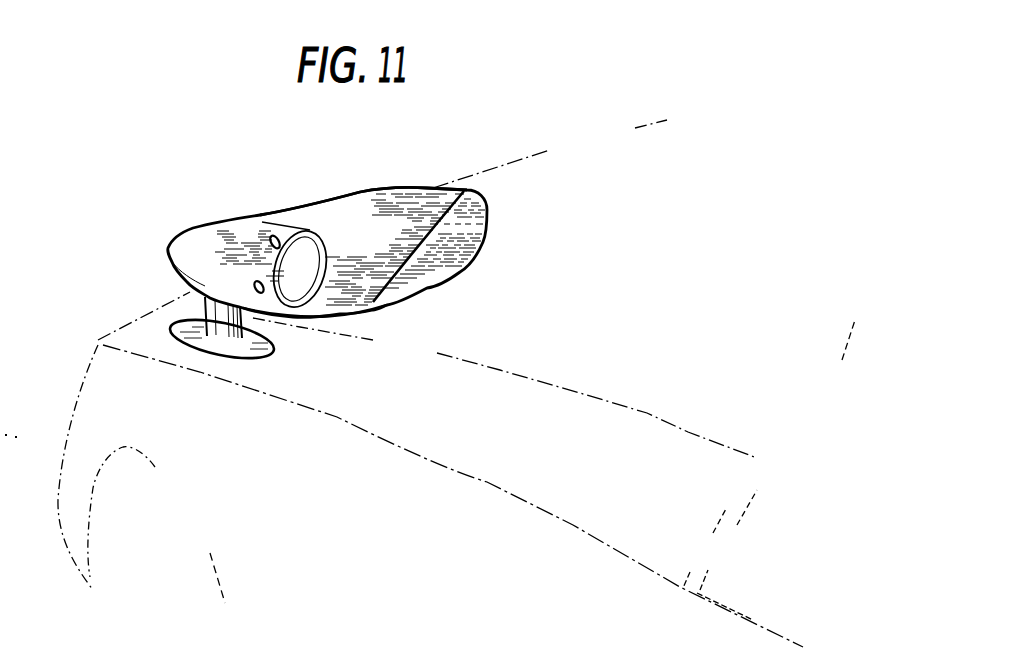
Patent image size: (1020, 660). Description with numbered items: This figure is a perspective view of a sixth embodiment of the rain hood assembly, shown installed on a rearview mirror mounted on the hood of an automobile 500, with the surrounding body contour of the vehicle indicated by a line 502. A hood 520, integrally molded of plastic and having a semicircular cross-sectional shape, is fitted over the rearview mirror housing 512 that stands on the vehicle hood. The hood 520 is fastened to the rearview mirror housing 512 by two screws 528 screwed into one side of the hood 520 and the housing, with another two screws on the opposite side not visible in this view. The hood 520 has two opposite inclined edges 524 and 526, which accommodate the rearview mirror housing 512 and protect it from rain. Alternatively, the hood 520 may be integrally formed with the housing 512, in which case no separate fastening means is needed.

The automobile 500 is at (528, 146).
The vehicle body surface line 502 is at (617, 154).
The rearview mirror housing 512 is at (216, 224).
The hood 520 is at (390, 186).
The inclined edge 524 is at (453, 272).
The inclined edge 526 is at (373, 302).
The screws 528 is at (256, 282).